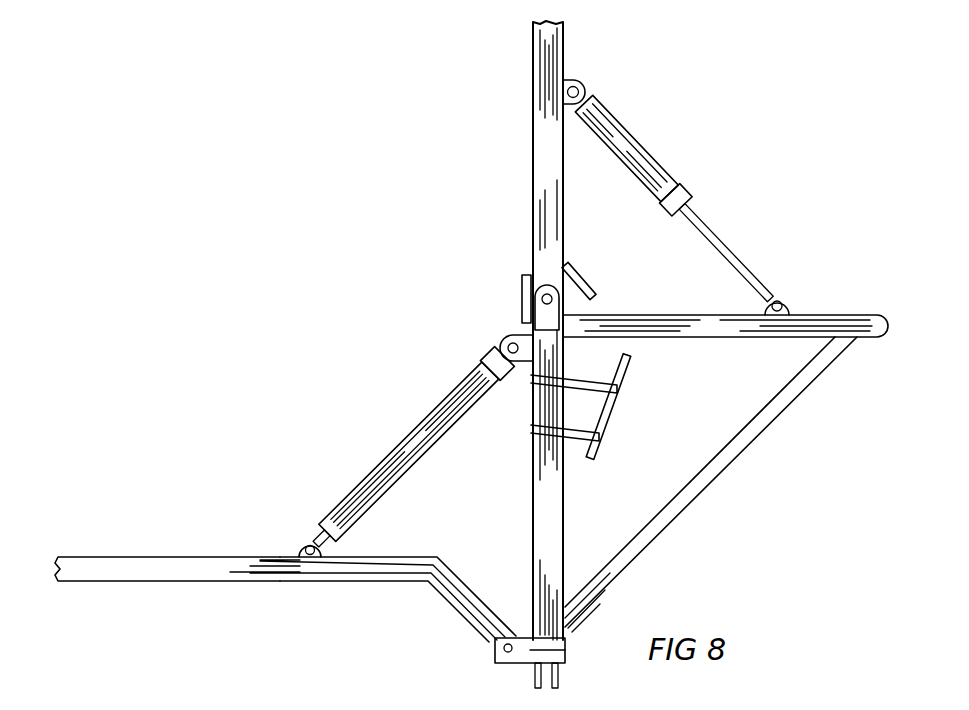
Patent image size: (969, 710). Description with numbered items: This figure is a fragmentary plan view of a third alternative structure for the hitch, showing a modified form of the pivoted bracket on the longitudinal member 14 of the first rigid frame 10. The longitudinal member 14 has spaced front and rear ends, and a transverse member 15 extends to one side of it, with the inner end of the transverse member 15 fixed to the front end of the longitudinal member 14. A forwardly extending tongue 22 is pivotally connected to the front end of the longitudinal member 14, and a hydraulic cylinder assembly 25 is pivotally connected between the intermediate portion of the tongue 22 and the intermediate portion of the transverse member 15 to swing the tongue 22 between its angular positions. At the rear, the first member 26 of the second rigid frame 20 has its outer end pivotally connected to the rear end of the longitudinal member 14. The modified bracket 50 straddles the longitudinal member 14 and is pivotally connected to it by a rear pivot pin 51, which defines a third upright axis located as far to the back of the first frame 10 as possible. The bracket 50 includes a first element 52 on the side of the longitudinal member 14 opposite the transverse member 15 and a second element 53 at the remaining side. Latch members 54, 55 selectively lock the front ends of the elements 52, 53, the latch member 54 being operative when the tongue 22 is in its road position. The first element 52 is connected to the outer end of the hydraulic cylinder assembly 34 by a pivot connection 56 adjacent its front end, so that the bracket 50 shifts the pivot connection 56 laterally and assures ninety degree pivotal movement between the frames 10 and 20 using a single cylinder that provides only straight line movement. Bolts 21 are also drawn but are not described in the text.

The first rigid frame 10 is at (524, 124).
The longitudinal member 14 is at (565, 520).
The transverse member 15 is at (872, 316).
The second rigid frame 20 is at (138, 548).
The bolts 21 is at (560, 684).
The tongue 22 is at (566, 176).
The hydraulic cylinder assembly 25 is at (640, 146).
The first member 26 is at (268, 556).
The hydraulic cylinder assembly 34 is at (412, 434).
The bracket 50 is at (518, 474).
The rear pivot pin 51 is at (520, 654).
The first element 52 is at (530, 516).
The second element 53 is at (608, 427).
The latch member 54 is at (590, 285).
The latch member 55 is at (522, 301).
The pivot connection 56 is at (497, 346).